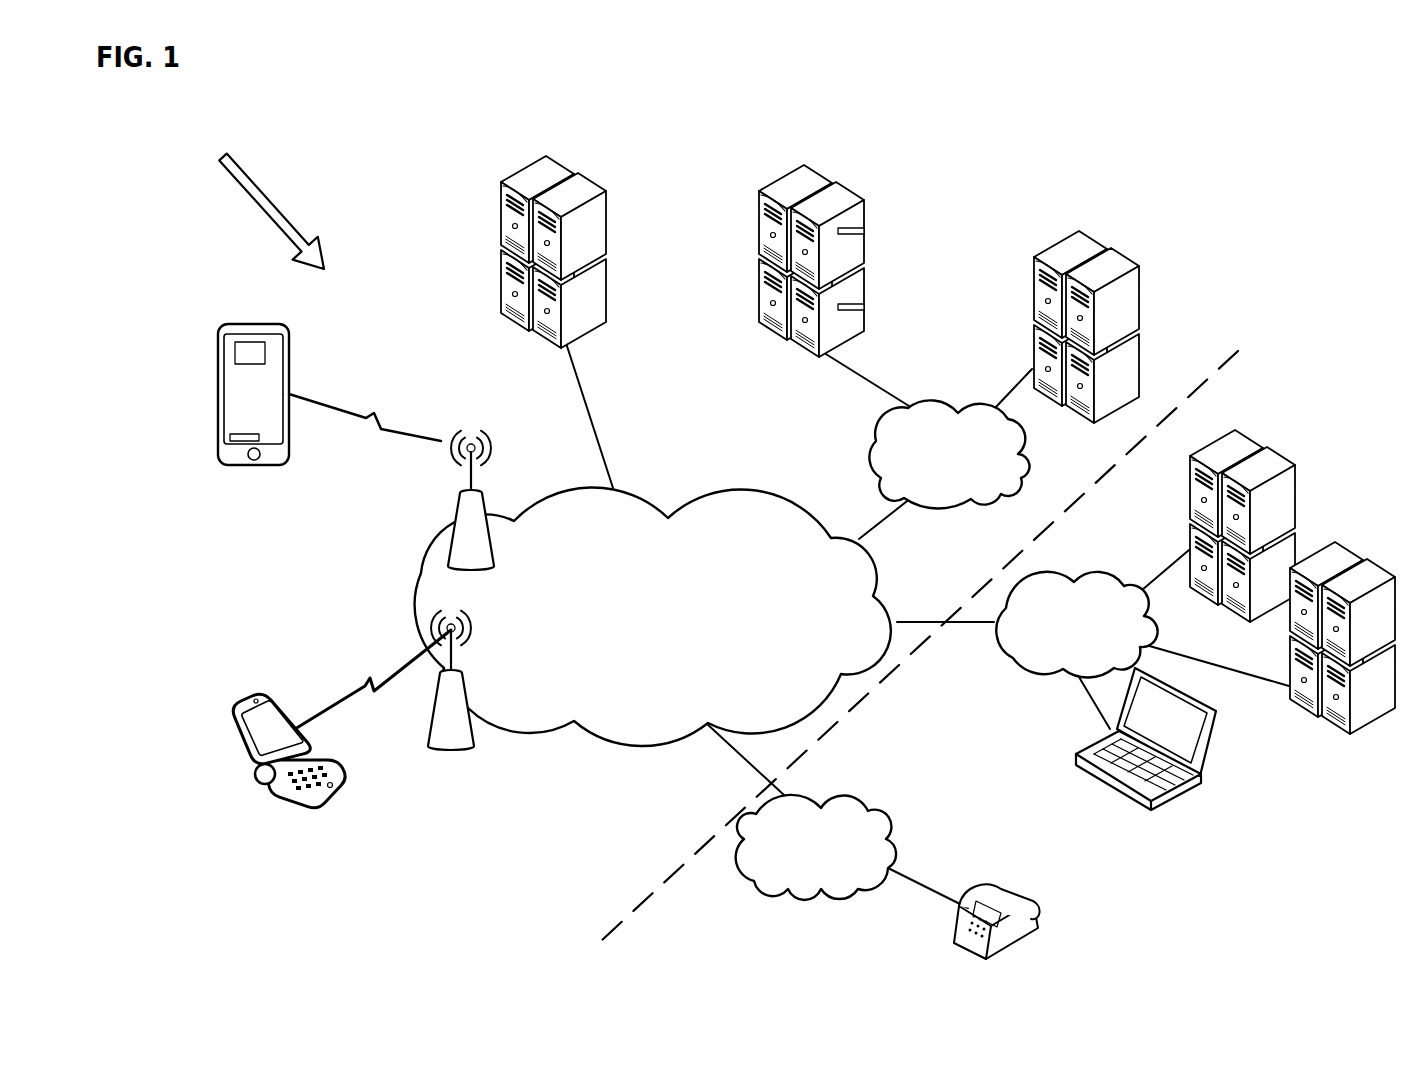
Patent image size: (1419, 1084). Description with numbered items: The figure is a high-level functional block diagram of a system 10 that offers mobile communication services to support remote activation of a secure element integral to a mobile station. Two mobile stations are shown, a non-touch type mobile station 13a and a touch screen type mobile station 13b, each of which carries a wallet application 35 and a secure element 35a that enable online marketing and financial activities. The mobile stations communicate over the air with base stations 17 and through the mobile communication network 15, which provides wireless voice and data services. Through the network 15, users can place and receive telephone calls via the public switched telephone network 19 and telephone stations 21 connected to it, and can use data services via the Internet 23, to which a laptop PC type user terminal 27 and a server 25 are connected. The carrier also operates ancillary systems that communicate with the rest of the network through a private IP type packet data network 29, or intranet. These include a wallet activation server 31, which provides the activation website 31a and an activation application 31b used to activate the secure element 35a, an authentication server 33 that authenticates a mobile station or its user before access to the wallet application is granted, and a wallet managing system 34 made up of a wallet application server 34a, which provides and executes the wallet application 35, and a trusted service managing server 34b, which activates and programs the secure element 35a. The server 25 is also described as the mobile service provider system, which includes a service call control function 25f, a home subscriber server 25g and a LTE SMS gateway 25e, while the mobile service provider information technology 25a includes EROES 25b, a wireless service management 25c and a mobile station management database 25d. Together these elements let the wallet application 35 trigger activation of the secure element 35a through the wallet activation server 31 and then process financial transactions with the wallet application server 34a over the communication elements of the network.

The system 10 is at (239, 190).
The mobile station 13a is at (215, 709).
The mobile station 13b is at (233, 376).
The mobile communication network 15 is at (548, 492).
The base station 17 is at (450, 516).
The public switched telephone network 19 is at (892, 830).
The telephone station 21 is at (953, 940).
The Internet 23 is at (1020, 668).
The server 25 is at (1327, 633).
The mobile service provider information technology 25a is at (1233, 498).
The EROES 25b is at (1303, 499).
The wireless service management 25c is at (1182, 555).
The mobile station management database 25d is at (1228, 462).
The LTE SMS gateway 25e is at (1378, 709).
The service call control function 25f is at (1303, 606).
The home subscriber server 25g is at (1312, 699).
The laptop PC type user terminal 27 is at (1084, 781).
The private IP type packet data network 29 is at (1028, 468).
The wallet activation server 31 is at (855, 237).
The activation website 31a is at (863, 230).
The activation application 31b is at (863, 306).
The authentication server 33 is at (1120, 242).
The wallet managing system 34 is at (610, 238).
The wallet application server 34a is at (612, 260).
The trusted service managing server 34b is at (558, 230).
The wallet application 35 is at (230, 440).
The secure element 35a is at (248, 342).